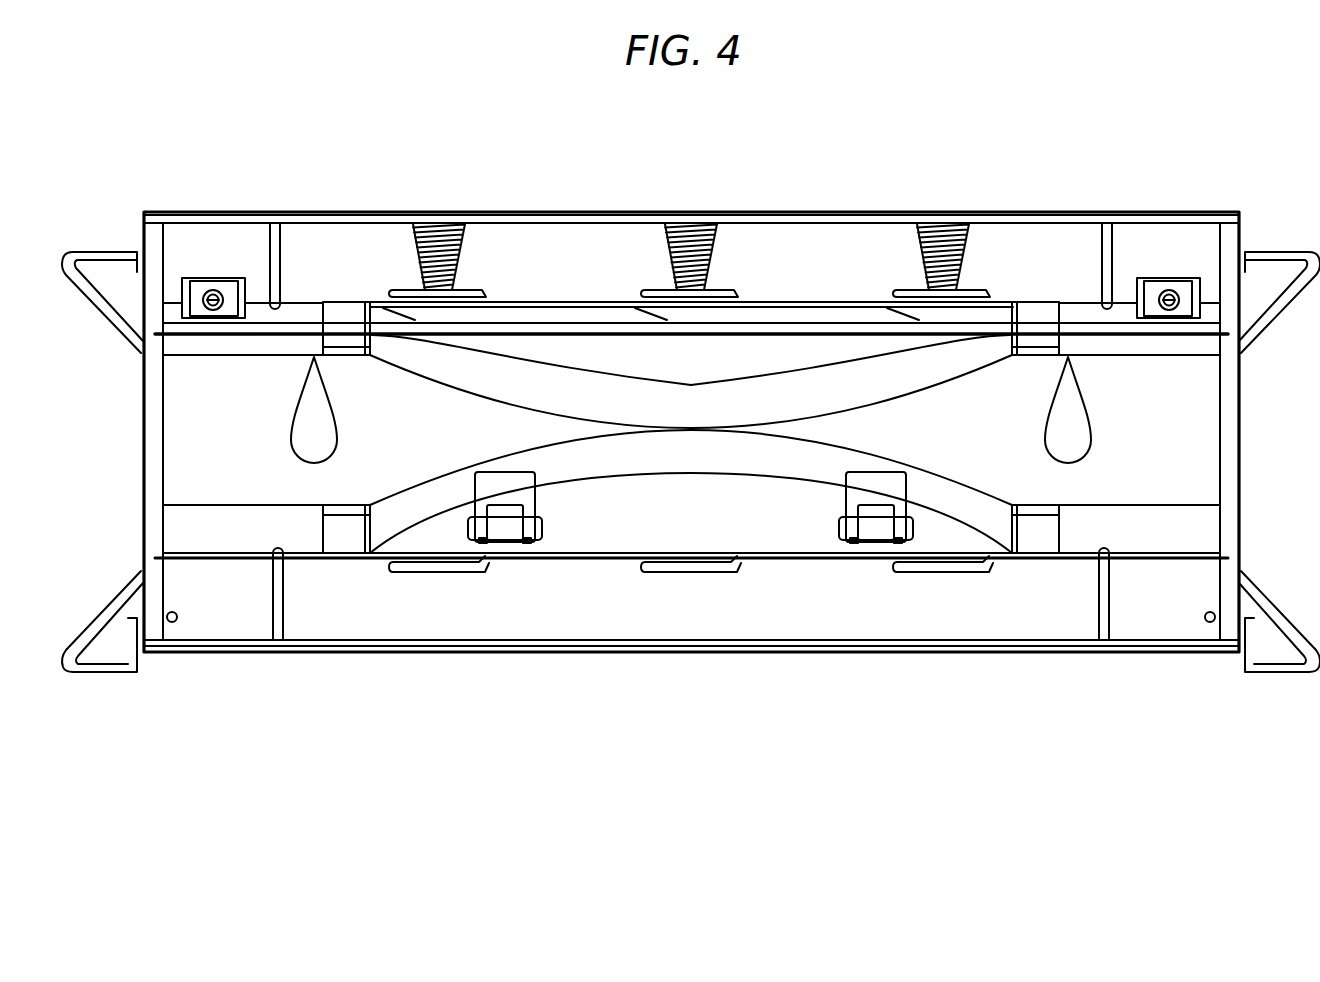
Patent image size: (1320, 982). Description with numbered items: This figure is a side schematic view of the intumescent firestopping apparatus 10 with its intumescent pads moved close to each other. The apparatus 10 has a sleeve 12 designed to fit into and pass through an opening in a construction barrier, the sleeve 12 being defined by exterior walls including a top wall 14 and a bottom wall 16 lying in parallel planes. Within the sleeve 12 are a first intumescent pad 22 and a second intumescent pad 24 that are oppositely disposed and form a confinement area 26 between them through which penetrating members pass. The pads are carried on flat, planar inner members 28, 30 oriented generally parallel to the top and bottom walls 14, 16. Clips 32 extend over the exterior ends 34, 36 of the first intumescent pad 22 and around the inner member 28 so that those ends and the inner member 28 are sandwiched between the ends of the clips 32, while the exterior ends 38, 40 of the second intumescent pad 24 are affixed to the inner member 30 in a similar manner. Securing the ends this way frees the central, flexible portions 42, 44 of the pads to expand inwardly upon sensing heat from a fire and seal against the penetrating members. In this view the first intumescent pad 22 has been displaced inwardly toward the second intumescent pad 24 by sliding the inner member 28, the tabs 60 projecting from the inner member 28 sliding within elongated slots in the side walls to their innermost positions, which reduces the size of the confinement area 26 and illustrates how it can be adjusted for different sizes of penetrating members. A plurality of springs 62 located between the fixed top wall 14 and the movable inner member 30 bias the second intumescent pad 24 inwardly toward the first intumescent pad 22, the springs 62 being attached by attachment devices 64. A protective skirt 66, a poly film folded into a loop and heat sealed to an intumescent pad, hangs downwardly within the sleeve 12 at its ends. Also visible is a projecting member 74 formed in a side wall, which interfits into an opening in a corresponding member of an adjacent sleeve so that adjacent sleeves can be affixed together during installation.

The intumescent firestopping apparatus 10 is at (287, 150).
The sleeve 12 is at (1188, 200).
The top wall 14 is at (500, 212).
The bottom wall 16 is at (443, 653).
The first intumescent pad 22 is at (960, 488).
The second intumescent pad 24 is at (962, 370).
The confinement area 26 is at (513, 428).
The inner member 28 is at (693, 574).
The inner member 30 is at (695, 292).
The clips 32 is at (345, 314).
The exterior end 34 is at (223, 520).
The exterior end 36 is at (1158, 520).
The exterior end 38 is at (239, 344).
The exterior end 40 is at (1150, 348).
The central flexible portion 42 is at (657, 467).
The central flexible portion 44 is at (673, 403).
The tabs 60 is at (275, 555).
The springs 62 is at (462, 262).
The attachment devices 64 is at (483, 293).
The protective skirt 66 is at (292, 453).
The projecting member 74 is at (838, 530).